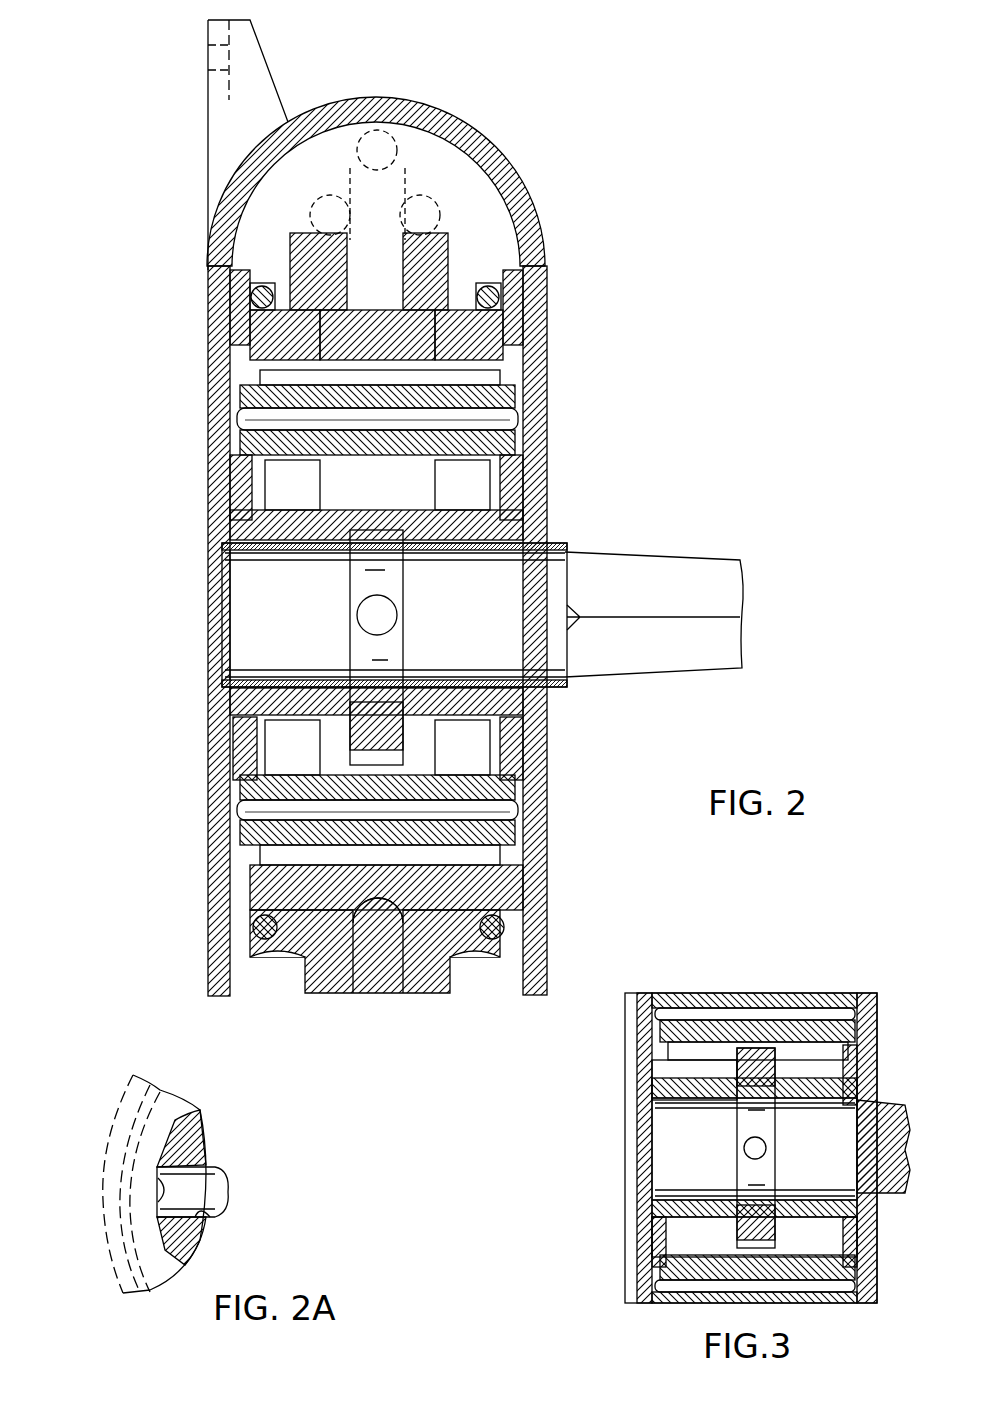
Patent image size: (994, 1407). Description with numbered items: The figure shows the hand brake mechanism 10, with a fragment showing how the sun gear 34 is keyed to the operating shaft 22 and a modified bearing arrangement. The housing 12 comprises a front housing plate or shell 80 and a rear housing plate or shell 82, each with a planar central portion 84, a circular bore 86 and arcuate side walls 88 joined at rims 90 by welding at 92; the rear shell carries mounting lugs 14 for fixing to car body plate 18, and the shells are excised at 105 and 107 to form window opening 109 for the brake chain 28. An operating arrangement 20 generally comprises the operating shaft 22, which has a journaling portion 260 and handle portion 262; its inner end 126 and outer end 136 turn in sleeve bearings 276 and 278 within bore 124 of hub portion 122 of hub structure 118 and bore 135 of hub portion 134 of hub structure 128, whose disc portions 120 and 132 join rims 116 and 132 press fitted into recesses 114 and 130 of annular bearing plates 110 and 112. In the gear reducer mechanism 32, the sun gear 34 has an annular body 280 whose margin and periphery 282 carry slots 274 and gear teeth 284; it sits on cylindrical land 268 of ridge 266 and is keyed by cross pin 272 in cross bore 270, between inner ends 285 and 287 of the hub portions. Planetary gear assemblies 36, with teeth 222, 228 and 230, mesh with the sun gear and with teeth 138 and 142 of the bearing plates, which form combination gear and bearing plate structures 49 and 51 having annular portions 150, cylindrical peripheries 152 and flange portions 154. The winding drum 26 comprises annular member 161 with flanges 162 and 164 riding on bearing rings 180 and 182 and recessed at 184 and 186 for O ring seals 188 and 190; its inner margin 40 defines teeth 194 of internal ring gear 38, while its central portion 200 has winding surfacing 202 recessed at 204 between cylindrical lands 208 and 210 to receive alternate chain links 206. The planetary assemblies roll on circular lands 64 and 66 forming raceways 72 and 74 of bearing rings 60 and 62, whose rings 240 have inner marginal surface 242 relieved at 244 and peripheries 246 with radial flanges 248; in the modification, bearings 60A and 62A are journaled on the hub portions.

In FIG. 2, the hand brake mechanism 10 is at (748, 80).
In FIG. 2, the housing 12 is at (530, 150).
In FIG. 2, the mounting lugs 14 is at (242, 8).
In FIG. 3, the car body plate 18 is at (625, 1035).
In FIG. 2, the upper chamber 20 is at (435, 152).
In FIG. 2, the operating shaft 22 is at (622, 551).
In FIG. 2A, the operating shaft 22 is at (163, 1153).
In FIG. 3, the operating shaft 22 is at (868, 1146).
In FIG. 2, the winding or brake drum 26 is at (500, 266).
In FIG. 2, the brake chain 28 is at (388, 132).
In FIG. 2, the gear reducer mechanism 32 is at (530, 418).
In FIG. 2, the sun gear 34 is at (283, 581).
In FIG. 2A, the sun gear 34 is at (110, 1268).
In FIG. 3, the sun gear 34 is at (740, 1190).
In FIG. 2, the planetary gear assemblies 36 is at (230, 490).
In FIG. 3, the planetary gear assemblies 36 is at (635, 1003).
In FIG. 2, the internal ring gear 38 is at (459, 630).
In FIG. 2, the inner margin 40 is at (385, 240).
In FIG. 2, the combination gear and bearing plate structure 49 is at (262, 385).
In FIG. 2, the combination gear and bearing plate structure 51 is at (525, 340).
In FIG. 2, the bearing ring 60 is at (248, 515).
In FIG. 3, the bearing 60A is at (754, 1149).
In FIG. 2, the bearing ring 62 is at (534, 488).
In FIG. 3, the bearing 62A is at (858, 1048).
In FIG. 2, the circular land 64 is at (376, 497).
In FIG. 2, the circular land 66 is at (462, 485).
In FIG. 2, the raceway 72 is at (260, 830).
In FIG. 2, the raceway 74 is at (520, 835).
In FIG. 2, the front housing plate or shell 80 is at (496, 138).
In FIG. 2, the rear housing plate or shell 82 is at (330, 115).
In FIG. 2, the planar central portions 84 is at (533, 300).
In FIG. 2, the circular bores 86 is at (250, 345).
In FIG. 2, the arcuate side walls 88 is at (275, 145).
In FIG. 2, the rims 90 is at (362, 100).
In FIG. 2, the welding 92 is at (378, 97).
In FIG. 2, the excised portion 105 is at (215, 1000).
In FIG. 2, the excised portion 107 is at (540, 1000).
In FIG. 2, the window opening 109 is at (365, 995).
In FIG. 2, the annular bearing plate 110 is at (227, 280).
In FIG. 2, the annular bearing plate 112 is at (512, 285).
In FIG. 2, the recess 114 is at (260, 405).
In FIG. 2, the rim 116 is at (230, 905).
In FIG. 2, the hub structure 118 is at (213, 770).
In FIG. 3, the hub structure 118 is at (643, 1052).
In FIG. 2, the disc portion 120 is at (240, 810).
In FIG. 2, the hub portion 122 is at (330, 700).
In FIG. 3, the hub portion 122 is at (700, 1090).
In FIG. 2, the bore 124 is at (230, 580).
In FIG. 2, the inner end 126 is at (235, 630).
In FIG. 3, the inner end 126 is at (660, 1142).
In FIG. 2, the hub structure 128 is at (554, 456).
In FIG. 2, the recess 130 is at (530, 870).
In FIG. 2, the rim and disc portion 132 is at (545, 780).
In FIG. 2, the hub portion 134 is at (575, 662).
In FIG. 3, the hub portion 134 is at (830, 1093).
In FIG. 2, the bore 135 is at (485, 672).
In FIG. 2, the outer end 136 is at (575, 600).
In FIG. 2, the gear teeth 138 is at (235, 450).
In FIG. 2, the gear teeth 142 is at (512, 375).
In FIG. 2, the annular portions 150 is at (377, 335).
In FIG. 2, the cylindrical peripheries 152 is at (277, 278).
In FIG. 2, the flange portions 154 is at (230, 308).
In FIG. 2, the annular member 161 is at (540, 180).
In FIG. 2, the flange portion 162 is at (268, 215).
In FIG. 2, the flange portion 164 is at (548, 230).
In FIG. 2, the bearing ring 180 is at (318, 271).
In FIG. 2, the bearing ring 182 is at (426, 271).
In FIG. 2, the recess 184 is at (292, 252).
In FIG. 2, the recess 186 is at (548, 270).
In FIG. 2, the O ring seal 188 is at (228, 330).
In FIG. 2, the O ring seal 190 is at (535, 320).
In FIG. 2, the teeth 194 is at (375, 945).
In FIG. 2, the central portion 200 is at (420, 240).
In FIG. 2, the drum chain winding surfacing 202 is at (328, 215).
In FIG. 2, the recess 204 is at (361, 240).
In FIG. 2, the chain links 206 is at (394, 145).
In FIG. 2, the cylindrical land 208 is at (318, 1005).
In FIG. 2A, the cylindrical land 208 is at (205, 1128).
In FIG. 2, the cylindrical land 210 is at (432, 1000).
In FIG. 2, the teeth 222 is at (400, 700).
In FIG. 2, the gear teeth 228 is at (292, 485).
In FIG. 2, the gear teeth 230 is at (462, 747).
In FIG. 2, the rings 240 is at (520, 740).
In FIG. 2, the inner marginal surface 242 is at (240, 728).
In FIG. 2, the relief 244 is at (240, 740).
In FIG. 2, the peripheries 246 is at (230, 790).
In FIG. 2, the radial flanges 248 is at (515, 770).
In FIG. 2, the journaling portion 260 is at (554, 530).
In FIG. 2, the handle portion 262 is at (738, 555).
In FIG. 2, the cylindrical ridge 266 is at (350, 600).
In FIG. 3, the cylindrical ridge 266 is at (785, 1170).
In FIG. 2, the cylindrical land 268 is at (400, 585).
In FIG. 2, the cross bore 270 is at (390, 608).
In FIG. 2A, the cross bore 270 is at (210, 1217).
In FIG. 2, the cross pin 272 is at (392, 625).
In FIG. 2A, the cross pin 272 is at (228, 1185).
In FIG. 3, the cross pin 272 is at (744, 1148).
In FIG. 2, the slots 274 is at (355, 632).
In FIG. 2A, the slots 274 is at (157, 1173).
In FIG. 2, the sleeve type bearing 276 is at (262, 575).
In FIG. 2, the sleeve type bearing 278 is at (510, 550).
In FIG. 2, the annular body 280 is at (292, 747).
In FIG. 2, the inner margin and outer periphery 282 is at (375, 749).
In FIG. 2, the gear teeth 284 is at (386, 887).
In FIG. 2A, the gear teeth 284 is at (100, 1185).
In FIG. 2, the inner end 285 is at (358, 590).
In FIG. 2, the inner end 287 is at (408, 555).